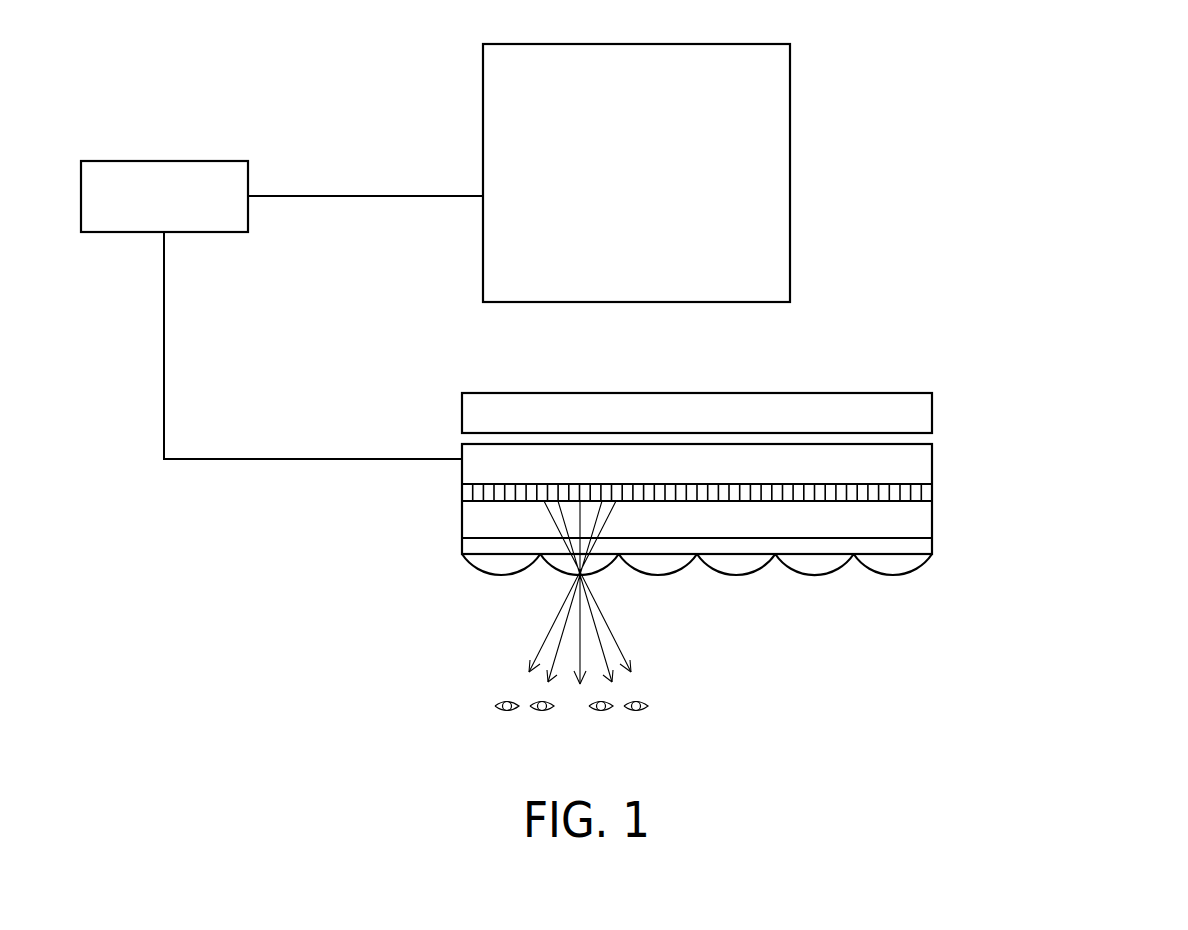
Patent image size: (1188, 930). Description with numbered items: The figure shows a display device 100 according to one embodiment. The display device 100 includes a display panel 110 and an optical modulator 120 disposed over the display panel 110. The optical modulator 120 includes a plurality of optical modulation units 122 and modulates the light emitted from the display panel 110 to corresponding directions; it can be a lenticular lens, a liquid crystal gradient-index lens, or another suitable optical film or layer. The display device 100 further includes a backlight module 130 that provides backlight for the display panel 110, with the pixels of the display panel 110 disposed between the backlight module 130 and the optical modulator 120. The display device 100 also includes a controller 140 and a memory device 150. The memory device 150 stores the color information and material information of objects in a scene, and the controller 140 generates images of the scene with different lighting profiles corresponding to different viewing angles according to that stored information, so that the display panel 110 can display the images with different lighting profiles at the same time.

The display device 100 is at (1017, 110).
The display panel 110 is at (934, 461).
The optical modulator 120 is at (729, 591).
The optical modulation unit 122 is at (493, 575).
The backlight module 130 is at (934, 408).
The controller 140 is at (101, 161).
The memory device 150 is at (510, 44).